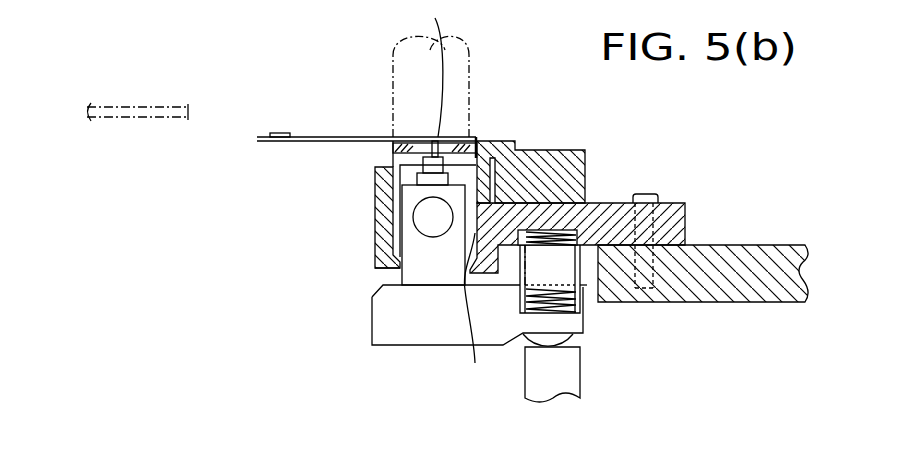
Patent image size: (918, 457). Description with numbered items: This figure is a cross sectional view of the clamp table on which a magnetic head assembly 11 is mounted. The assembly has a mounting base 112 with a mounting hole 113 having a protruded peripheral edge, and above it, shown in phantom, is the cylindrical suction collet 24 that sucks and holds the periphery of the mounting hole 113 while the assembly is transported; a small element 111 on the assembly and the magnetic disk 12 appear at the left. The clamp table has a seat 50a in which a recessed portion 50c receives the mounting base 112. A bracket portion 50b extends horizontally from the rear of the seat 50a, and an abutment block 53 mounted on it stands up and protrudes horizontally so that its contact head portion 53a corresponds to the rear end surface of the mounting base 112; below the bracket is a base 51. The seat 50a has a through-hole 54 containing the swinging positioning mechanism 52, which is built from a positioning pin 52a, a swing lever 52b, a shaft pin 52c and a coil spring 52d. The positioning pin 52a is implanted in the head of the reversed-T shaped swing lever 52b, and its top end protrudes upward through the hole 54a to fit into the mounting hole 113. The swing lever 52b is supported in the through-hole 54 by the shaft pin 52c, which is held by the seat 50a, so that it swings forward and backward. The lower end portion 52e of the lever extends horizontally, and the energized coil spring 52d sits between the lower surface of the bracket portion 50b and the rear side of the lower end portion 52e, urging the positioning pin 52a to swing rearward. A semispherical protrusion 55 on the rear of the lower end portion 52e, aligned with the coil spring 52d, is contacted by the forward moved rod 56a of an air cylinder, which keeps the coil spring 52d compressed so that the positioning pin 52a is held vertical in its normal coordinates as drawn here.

The magnetic head assembly 11 is at (315, 124).
The electrode pad 111 is at (284, 133).
The mounting base 112 is at (469, 136).
The mounting hole 113 is at (439, 68).
The magnetic disk 12 is at (130, 107).
The cylindrical suction collet 24 is at (470, 49).
The seat 50a is at (388, 237).
The bracket portion 50b is at (598, 205).
The recessed portion 50c is at (388, 150).
The base plate 51 is at (770, 256).
The swinging positioning mechanism 52 is at (409, 359).
The positioning pin 52a is at (434, 137).
The swing lever 52b is at (405, 272).
The shaft pin 52c is at (418, 215).
The coil spring 52d is at (573, 297).
The lower end portion 52e is at (383, 320).
The abutment block 53 is at (584, 162).
The contact head portion 53a is at (478, 139).
The through-hole 54 is at (468, 313).
The hole 54a is at (390, 158).
The semispherical protrusion 55 is at (573, 336).
The rod 56a is at (575, 374).